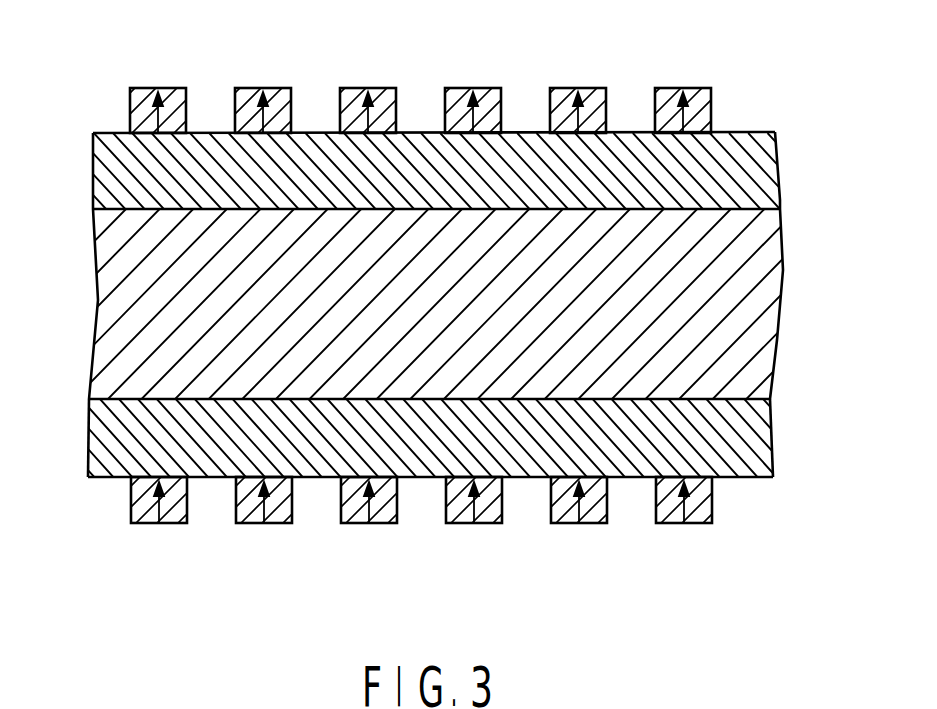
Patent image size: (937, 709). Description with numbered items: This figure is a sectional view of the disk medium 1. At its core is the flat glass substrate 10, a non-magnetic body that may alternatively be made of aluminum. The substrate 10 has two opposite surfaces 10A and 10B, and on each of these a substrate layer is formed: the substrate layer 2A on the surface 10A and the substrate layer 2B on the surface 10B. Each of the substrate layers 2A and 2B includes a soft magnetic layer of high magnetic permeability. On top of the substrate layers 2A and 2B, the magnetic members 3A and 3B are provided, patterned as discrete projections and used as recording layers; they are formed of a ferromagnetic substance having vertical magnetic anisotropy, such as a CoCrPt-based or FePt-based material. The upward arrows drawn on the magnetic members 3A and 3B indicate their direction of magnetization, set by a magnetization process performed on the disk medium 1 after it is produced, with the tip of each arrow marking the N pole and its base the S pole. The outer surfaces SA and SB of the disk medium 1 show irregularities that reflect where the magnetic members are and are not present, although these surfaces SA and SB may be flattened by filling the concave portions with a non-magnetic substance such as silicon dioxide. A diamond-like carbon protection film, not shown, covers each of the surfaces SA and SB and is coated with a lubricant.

The disk medium 1 is at (468, 334).
The glass substrate 10 is at (764, 310).
The surface of the substrate 10A is at (118, 209).
The surface of the substrate 10B is at (112, 400).
The substrate layer 2A is at (764, 172).
The substrate layer 2B is at (763, 436).
The magnetic members 3A is at (490, 88).
The magnetic members 3B is at (493, 523).
The surface of the disk medium SA is at (268, 70).
The surface of the disk medium SB is at (259, 545).